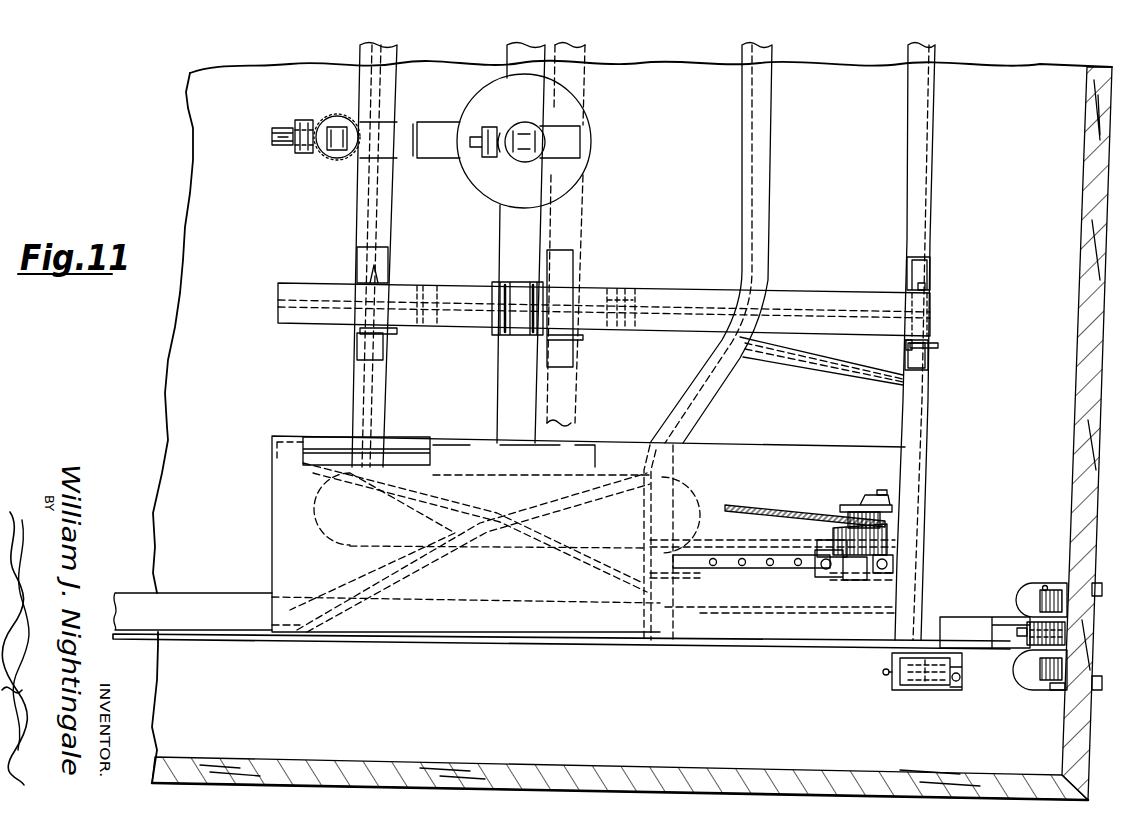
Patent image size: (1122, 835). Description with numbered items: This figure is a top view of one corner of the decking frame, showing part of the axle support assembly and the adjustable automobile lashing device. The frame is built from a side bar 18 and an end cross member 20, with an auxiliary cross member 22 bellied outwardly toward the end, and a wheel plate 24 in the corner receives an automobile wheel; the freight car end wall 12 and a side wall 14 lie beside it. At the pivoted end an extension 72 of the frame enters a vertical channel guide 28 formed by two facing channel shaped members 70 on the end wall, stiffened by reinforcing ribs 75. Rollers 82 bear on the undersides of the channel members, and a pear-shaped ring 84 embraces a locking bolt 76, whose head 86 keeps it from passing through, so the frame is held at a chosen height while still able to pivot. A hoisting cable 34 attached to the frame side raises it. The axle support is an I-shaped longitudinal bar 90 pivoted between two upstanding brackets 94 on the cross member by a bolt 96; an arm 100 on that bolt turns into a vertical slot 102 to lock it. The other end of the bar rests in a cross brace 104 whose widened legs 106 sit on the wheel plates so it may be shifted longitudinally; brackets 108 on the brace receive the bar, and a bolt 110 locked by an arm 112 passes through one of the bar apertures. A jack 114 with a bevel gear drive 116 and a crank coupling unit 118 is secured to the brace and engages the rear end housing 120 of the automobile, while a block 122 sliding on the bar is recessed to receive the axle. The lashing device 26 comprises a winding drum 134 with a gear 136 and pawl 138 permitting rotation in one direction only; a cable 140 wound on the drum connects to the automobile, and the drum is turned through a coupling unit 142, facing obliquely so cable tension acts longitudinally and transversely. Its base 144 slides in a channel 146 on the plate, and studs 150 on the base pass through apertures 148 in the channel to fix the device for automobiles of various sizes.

The end wall 12 is at (1084, 417).
The side wall 14 is at (560, 762).
The side member 18 is at (190, 607).
The end cross member 20 is at (938, 193).
The auxiliary cross member 22 is at (762, 197).
The wheel plate 24 is at (272, 500).
The lashing device 26 is at (843, 492).
The vertical channel guide 28 is at (1044, 558).
The cable 34 is at (883, 676).
The channel shaped member 70 is at (1026, 595).
The extension 72 is at (997, 614).
The reinforcing rib 75 is at (1018, 680).
The bolt 76 is at (1060, 590).
The roller 82 is at (1067, 683).
The ring 84 is at (1018, 636).
The head 86 is at (1045, 683).
The longitudinal bar 90 is at (672, 292).
The bracket 94 is at (936, 279).
The bolt 96 is at (930, 291).
The arm 100 is at (940, 344).
The vertical slot 102 is at (935, 352).
The brace 104 is at (355, 402).
The leg 106 is at (395, 437).
The bracket 108 is at (360, 262).
The bolt 110 is at (378, 275).
The arm 112 is at (395, 333).
The jack 114 is at (311, 153).
The bevel gear drive 116 is at (340, 118).
The coupling unit 118 is at (283, 150).
The rear end housing 120 is at (472, 186).
The block 122 is at (505, 290).
The winding drum 134 is at (895, 522).
The gear 136 is at (890, 545).
The pawl 138 is at (830, 545).
The cable 140 is at (771, 513).
The coupling unit 142 is at (882, 490).
The base 144 is at (836, 577).
The channel 146 is at (758, 585).
The aperture 148 is at (796, 585).
The stud 150 is at (895, 563).